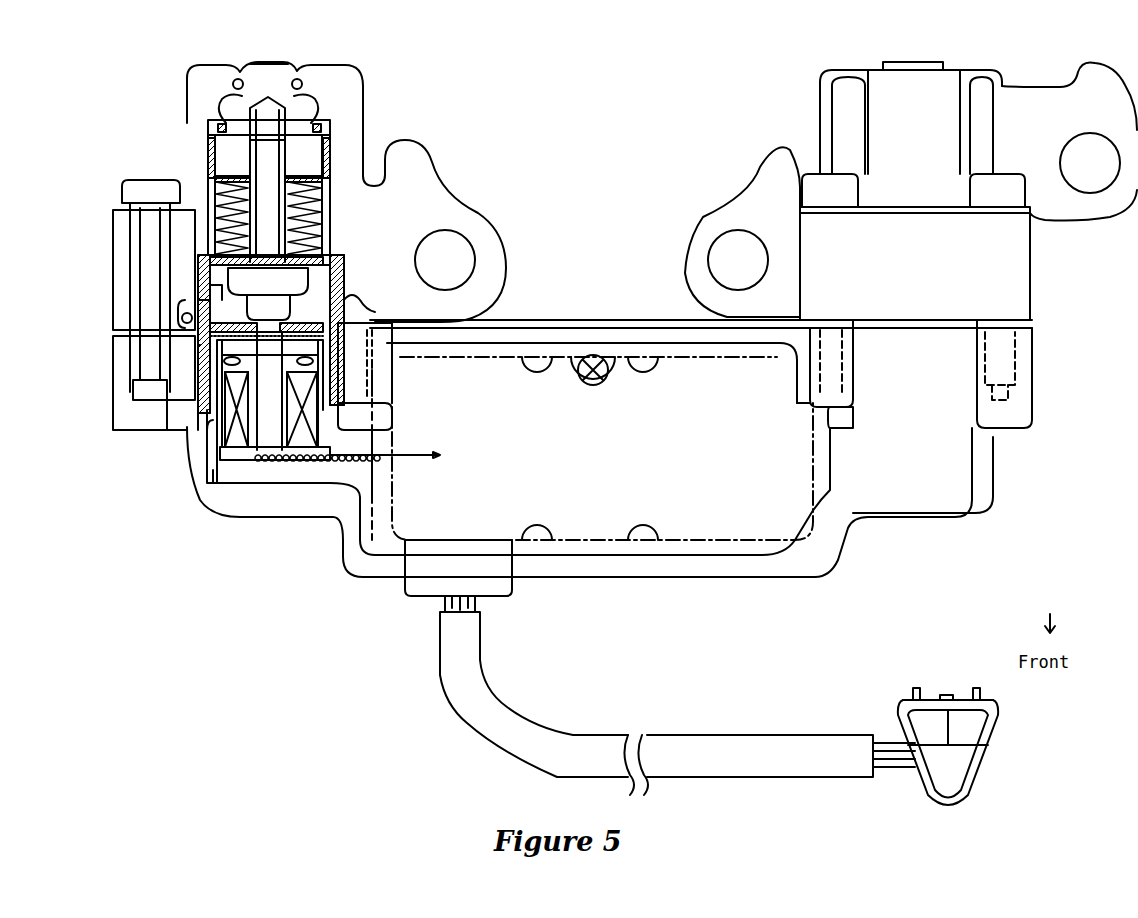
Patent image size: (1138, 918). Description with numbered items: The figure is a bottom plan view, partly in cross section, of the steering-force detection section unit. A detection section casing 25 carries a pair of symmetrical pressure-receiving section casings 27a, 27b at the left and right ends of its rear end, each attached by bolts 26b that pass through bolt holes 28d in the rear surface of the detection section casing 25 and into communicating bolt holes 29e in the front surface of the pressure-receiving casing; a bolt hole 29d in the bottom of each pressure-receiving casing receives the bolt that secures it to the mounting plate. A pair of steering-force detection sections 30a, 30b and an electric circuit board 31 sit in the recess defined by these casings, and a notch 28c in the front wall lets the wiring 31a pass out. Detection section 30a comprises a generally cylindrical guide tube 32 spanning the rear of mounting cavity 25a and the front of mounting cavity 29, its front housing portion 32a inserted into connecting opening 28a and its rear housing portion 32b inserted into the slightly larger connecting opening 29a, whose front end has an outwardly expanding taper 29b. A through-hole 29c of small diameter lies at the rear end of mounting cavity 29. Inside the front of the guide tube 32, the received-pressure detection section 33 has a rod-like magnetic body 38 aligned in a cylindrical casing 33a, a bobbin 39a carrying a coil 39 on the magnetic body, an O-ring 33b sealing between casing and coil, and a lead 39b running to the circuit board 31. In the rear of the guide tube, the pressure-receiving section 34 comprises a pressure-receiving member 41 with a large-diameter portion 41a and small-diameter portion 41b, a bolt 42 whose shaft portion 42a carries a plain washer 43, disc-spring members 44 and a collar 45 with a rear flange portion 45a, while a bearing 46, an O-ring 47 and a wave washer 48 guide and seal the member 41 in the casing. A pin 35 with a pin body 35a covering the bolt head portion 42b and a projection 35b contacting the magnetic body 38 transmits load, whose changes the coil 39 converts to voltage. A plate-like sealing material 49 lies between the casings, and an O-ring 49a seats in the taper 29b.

The detection section casing 25 is at (258, 500).
The mounting cavity 25a is at (210, 440).
The bolt 26b is at (130, 184).
The pressure-receiving section casing 27a is at (350, 90).
The pressure-receiving section casing 27b is at (1002, 82).
The connecting opening 28a is at (205, 375).
The notch 28c is at (433, 595).
The bolt hole 28d is at (143, 388).
The mounting cavity 29 is at (335, 215).
The connecting opening 29a is at (344, 263).
The taper 29b is at (347, 305).
The through-hole 29c is at (283, 68).
The bolt hole 29d is at (445, 244).
The bolt hole 29e is at (143, 240).
The steering-force detection section 30a is at (375, 60).
The steering-force detection section 30b is at (990, 52).
The electric circuit board 31 is at (505, 400).
The wiring 31a is at (757, 737).
The guide tube 32 is at (197, 333).
The front housing portion 32a is at (330, 411).
The rear housing portion 32b is at (200, 280).
The received-pressure detection section 33 is at (229, 486).
The casing 33a is at (207, 435).
The O-ring 33b is at (322, 369).
The pressure-receiving section 34 is at (340, 132).
The pin 35 is at (68, 284).
The pin body 35a is at (222, 292).
The projection 35b is at (197, 303).
The magnetic body 38 is at (284, 346).
The coil 39 is at (240, 457).
The bobbin 39a is at (258, 445).
The lead 39b is at (395, 452).
The pressure-receiving member 41 is at (146, 52).
The large-diameter portion 41a is at (218, 106).
The small-diameter portion 41b is at (234, 80).
The bolt 42 is at (140, 118).
The shaft portion 42a is at (260, 197).
The head portion 42b is at (250, 262).
The plain washer 43 is at (337, 253).
The spring members 44 is at (323, 222).
The collar 45 is at (340, 201).
The flange portion 45a is at (305, 180).
The bearing 46 is at (330, 183).
The O-ring 47 is at (302, 82).
The wave washer 48 is at (322, 123).
The sealing material 49 is at (432, 320).
The O-ring 49a is at (195, 320).